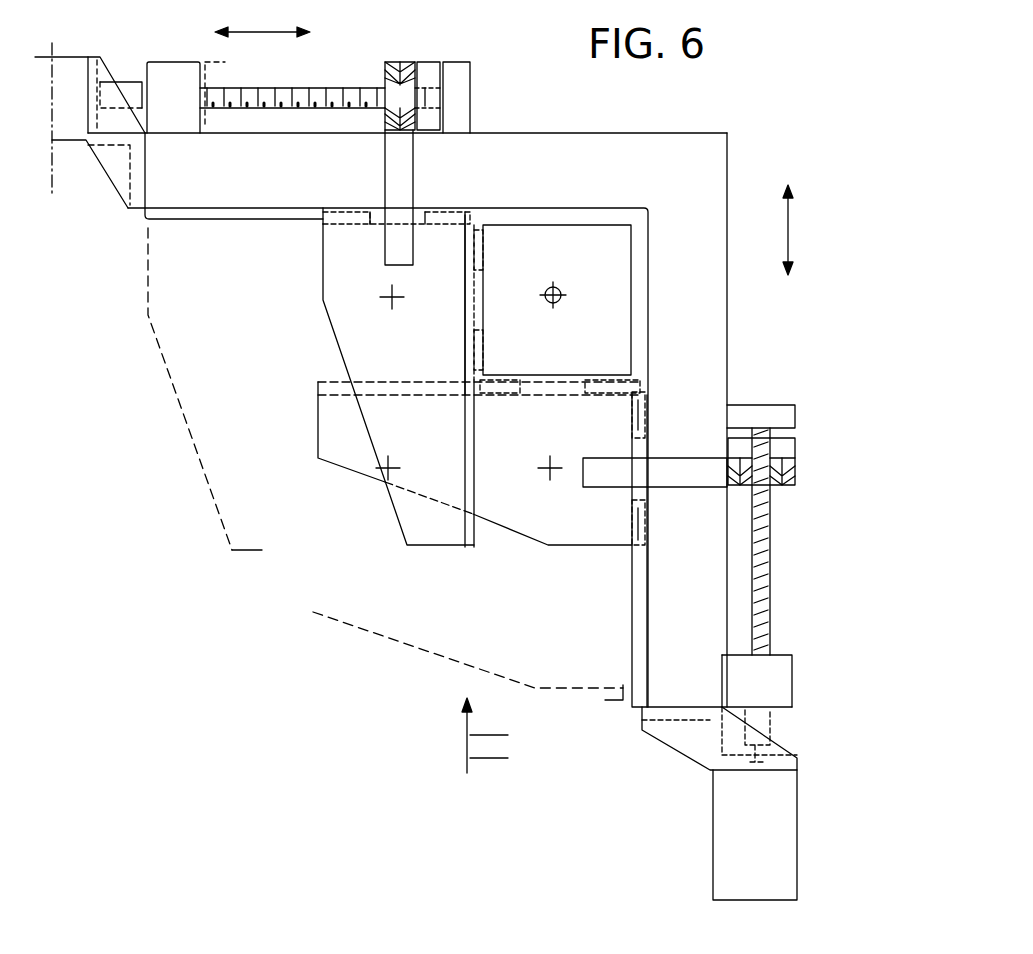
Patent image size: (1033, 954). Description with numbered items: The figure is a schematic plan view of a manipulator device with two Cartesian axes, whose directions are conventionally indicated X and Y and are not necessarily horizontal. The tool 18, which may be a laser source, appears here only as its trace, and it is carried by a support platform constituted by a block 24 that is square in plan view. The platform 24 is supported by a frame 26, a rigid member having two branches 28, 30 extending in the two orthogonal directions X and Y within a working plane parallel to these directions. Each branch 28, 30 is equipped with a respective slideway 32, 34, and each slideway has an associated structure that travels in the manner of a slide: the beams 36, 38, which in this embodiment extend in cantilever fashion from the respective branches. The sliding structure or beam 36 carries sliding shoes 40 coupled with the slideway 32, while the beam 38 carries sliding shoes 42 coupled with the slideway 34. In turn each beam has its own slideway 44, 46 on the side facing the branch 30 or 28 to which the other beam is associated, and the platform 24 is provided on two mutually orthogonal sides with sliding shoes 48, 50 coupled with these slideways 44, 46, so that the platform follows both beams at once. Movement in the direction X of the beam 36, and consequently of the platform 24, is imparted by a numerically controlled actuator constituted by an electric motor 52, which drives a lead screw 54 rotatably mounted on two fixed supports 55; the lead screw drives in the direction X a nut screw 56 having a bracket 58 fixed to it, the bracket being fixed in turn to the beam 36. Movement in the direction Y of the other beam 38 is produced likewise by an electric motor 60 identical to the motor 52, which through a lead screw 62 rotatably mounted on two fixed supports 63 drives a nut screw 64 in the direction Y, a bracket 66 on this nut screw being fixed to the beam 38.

The tool 18 is at (562, 296).
The block 24 is at (618, 318).
The frame 26 is at (700, 128).
The branch 28 is at (710, 358).
The branch 30 is at (568, 135).
The slideway 32 is at (632, 642).
The slideway 34 is at (172, 232).
The sliding structure or beam 36 is at (588, 530).
The sliding structure or beam 38 is at (340, 300).
The sliding shoes 40 is at (645, 418).
The sliding shoes 42 is at (348, 212).
The slideway 44 is at (545, 388).
The slideway 46 is at (475, 305).
The sliding shoes 48 is at (503, 390).
The sliding shoes 50 is at (485, 246).
The electric motor 52 is at (725, 820).
The lead screw 54 is at (770, 598).
The fixed supports 55 is at (780, 410).
The nut screw 56 is at (790, 466).
The bracket 58 is at (712, 487).
The electric motor 60 is at (85, 148).
The lead screw 62 is at (297, 88).
The fixed supports 63 is at (165, 78).
The nut screw 64 is at (385, 78).
The bracket 66 is at (385, 250).